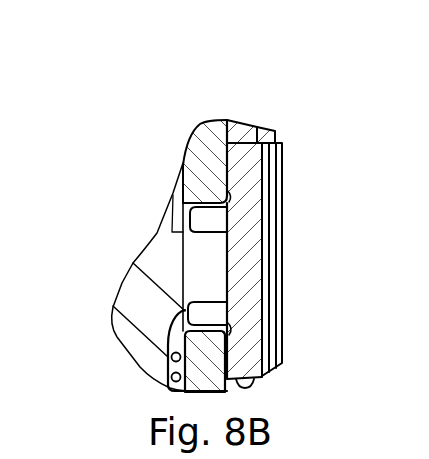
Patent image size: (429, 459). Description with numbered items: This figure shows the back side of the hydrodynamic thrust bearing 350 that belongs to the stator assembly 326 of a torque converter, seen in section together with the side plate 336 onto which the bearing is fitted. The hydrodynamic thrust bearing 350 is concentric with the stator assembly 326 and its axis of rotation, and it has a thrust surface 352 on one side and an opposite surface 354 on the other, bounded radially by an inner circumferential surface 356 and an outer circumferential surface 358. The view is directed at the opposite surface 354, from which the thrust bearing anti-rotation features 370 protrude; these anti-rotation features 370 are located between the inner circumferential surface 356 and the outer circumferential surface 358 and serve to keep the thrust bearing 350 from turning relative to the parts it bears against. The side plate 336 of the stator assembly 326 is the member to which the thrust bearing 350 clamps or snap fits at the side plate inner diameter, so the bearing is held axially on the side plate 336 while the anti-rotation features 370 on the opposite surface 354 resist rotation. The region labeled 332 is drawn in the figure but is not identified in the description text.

The stator assembly 326 is at (323, 131).
The housing 332 is at (145, 322).
The side plate 336 is at (210, 121).
The hydrodynamic thrust bearing 350 is at (262, 268).
The thrust surface 352 is at (262, 190).
The opposite surface 354 is at (227, 270).
The inner circumferential surface 356 is at (242, 386).
The outer circumferential surface 358 is at (238, 142).
The thrust bearing anti-rotation features 370 is at (211, 247).